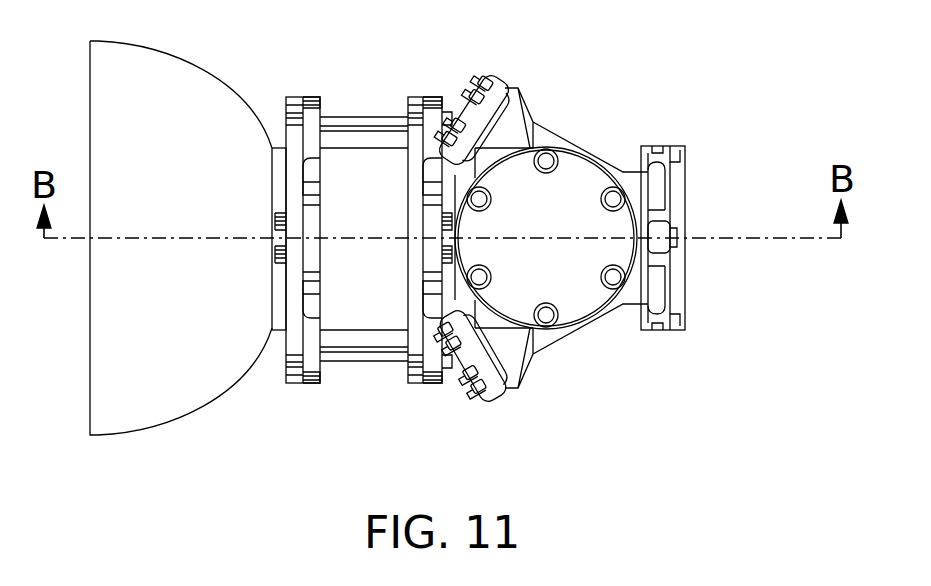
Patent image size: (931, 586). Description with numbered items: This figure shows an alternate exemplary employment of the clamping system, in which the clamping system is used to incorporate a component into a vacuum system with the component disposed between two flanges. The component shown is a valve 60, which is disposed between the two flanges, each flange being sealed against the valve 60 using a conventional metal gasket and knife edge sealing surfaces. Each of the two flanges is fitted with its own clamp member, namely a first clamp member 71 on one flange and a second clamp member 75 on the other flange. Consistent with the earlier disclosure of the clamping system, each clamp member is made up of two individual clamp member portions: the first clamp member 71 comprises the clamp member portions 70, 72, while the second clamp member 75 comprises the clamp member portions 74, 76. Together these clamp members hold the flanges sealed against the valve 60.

The valve 60 is at (352, 362).
The clamp member portion 70 is at (293, 96).
The clamp member 71 is at (292, 384).
The clamp member portion 72 is at (313, 97).
The clamp member portion 74 is at (413, 96).
The clamp member 75 is at (418, 384).
The clamp member portion 76 is at (438, 96).